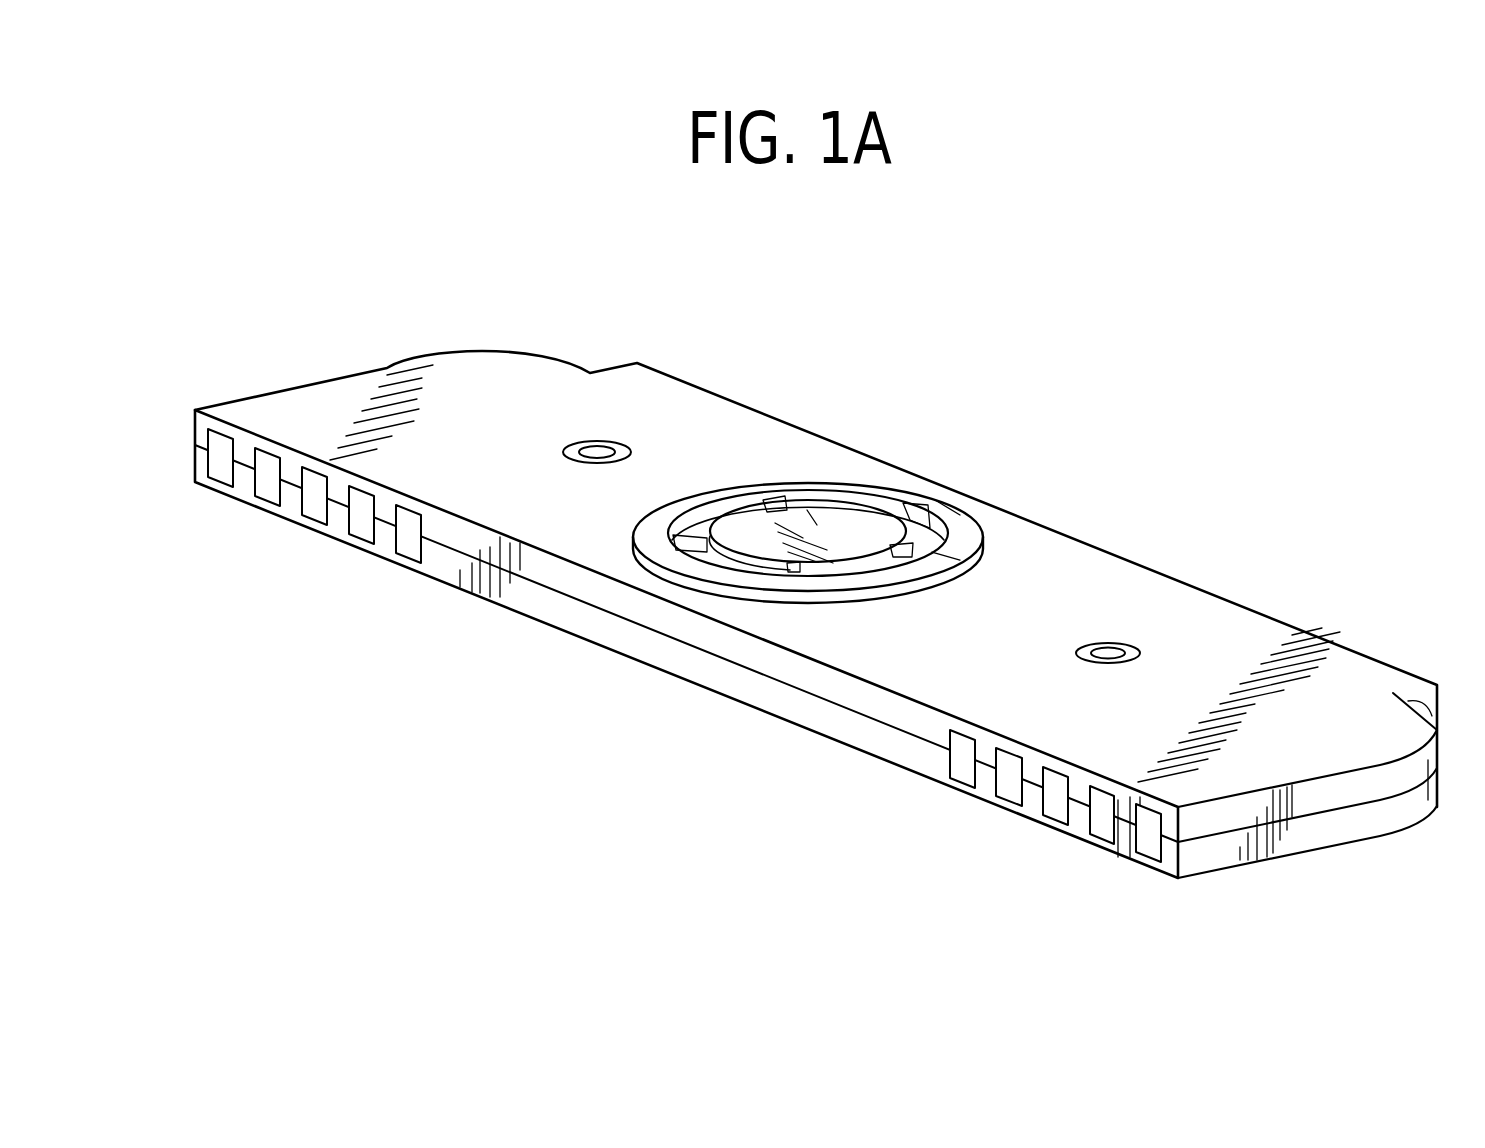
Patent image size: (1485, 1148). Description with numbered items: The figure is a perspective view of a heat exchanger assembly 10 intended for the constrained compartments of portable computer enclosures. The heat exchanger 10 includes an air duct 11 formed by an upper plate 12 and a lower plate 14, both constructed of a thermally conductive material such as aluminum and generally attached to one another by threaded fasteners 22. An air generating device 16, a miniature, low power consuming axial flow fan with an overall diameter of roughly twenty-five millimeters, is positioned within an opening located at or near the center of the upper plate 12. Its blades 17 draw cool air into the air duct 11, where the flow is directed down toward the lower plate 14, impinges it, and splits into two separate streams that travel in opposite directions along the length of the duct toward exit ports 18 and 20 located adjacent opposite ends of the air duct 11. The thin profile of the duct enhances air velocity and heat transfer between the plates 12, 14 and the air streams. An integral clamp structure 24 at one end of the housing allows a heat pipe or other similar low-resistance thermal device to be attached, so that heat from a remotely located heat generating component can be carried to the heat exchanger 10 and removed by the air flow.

The heat exchanger assembly 10 is at (572, 257).
The air duct 11 is at (1213, 648).
The upper plate 12 is at (1390, 788).
The lower plate 14 is at (1342, 822).
The air generating device 16 is at (838, 520).
The blades 17 is at (907, 503).
The exit port 18 is at (363, 526).
The exit port 20 is at (1103, 823).
The threaded fasteners 22 is at (597, 455).
The integral clamp structure 24 is at (1437, 705).